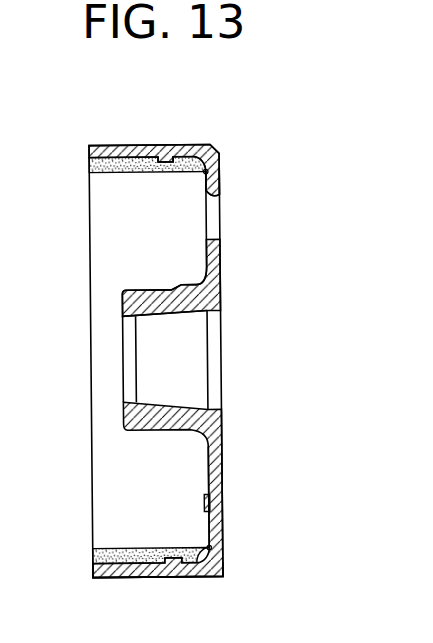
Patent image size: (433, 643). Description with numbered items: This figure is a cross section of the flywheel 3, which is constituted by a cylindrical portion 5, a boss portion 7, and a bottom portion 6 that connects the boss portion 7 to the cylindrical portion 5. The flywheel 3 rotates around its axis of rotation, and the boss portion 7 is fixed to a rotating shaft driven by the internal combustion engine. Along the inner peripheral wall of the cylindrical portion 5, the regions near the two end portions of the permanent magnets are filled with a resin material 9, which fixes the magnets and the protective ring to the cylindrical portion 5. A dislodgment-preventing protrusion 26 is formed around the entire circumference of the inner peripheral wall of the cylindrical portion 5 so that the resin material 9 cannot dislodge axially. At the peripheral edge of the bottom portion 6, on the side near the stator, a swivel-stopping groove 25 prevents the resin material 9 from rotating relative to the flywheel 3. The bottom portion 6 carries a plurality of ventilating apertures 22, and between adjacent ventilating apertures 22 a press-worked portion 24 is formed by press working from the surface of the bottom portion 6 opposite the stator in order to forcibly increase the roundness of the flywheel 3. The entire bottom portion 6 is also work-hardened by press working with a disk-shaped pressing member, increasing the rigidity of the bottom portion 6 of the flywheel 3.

The ventilating aperture 22 is at (221, 195).
The resin material 9 is at (114, 160).
The dislodgment-preventing protrusion 26 is at (170, 147).
The swivel-stopping groove 25 is at (213, 172).
The flywheel 3 is at (221, 262).
The boss portion 7 is at (198, 297).
The bottom portion 6 is at (207, 425).
The press-worked portion 24 is at (208, 503).
The cylindrical portion 5 is at (176, 577).